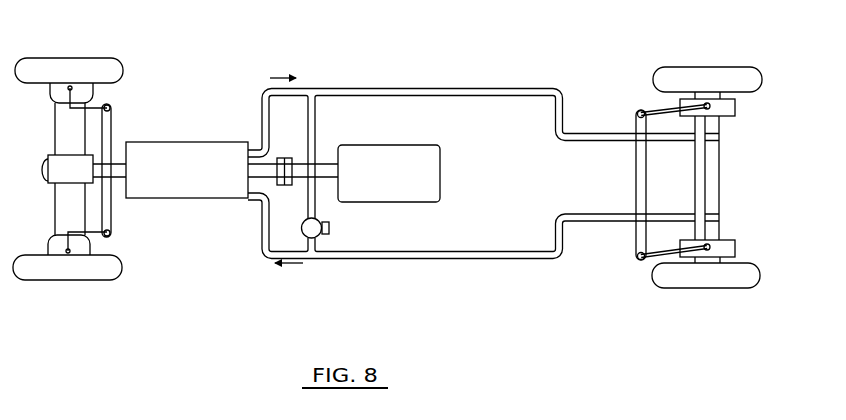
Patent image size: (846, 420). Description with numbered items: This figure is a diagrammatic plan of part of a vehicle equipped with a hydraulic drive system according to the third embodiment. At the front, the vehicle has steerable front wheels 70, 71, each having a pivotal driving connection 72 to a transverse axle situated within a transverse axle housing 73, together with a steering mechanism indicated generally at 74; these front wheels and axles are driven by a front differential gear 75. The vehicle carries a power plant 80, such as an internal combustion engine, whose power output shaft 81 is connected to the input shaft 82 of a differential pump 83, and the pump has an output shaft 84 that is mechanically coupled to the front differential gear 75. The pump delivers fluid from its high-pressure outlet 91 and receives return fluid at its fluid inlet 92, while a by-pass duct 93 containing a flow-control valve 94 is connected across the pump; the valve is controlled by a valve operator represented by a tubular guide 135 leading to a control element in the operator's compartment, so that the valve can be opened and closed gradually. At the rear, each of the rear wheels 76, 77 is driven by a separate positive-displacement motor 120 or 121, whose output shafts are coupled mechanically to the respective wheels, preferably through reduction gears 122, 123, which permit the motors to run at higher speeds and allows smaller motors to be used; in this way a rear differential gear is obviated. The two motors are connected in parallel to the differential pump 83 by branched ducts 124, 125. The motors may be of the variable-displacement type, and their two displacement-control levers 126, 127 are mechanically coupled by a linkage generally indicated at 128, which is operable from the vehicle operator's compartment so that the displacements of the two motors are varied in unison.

The steerable front wheel 70 is at (86, 64).
The steerable front wheel 71 is at (87, 272).
The pivotal driving connection 72 is at (66, 90).
The transverse axle housing 73 is at (63, 203).
The steering mechanism 74 is at (110, 124).
The front differential gear 75 is at (43, 165).
The rear wheel 76 is at (706, 70).
The rear wheel 77 is at (718, 285).
The power plant 80 is at (412, 150).
The power output shaft 81 is at (326, 166).
The input shaft 82 is at (274, 167).
The differential pump 83 is at (181, 198).
The output shaft 84 is at (120, 179).
The high-pressure outlet 91 is at (256, 112).
The fluid inlet 92 is at (257, 170).
The by-pass duct 93 is at (315, 112).
The flow-control valve 94 is at (301, 232).
The positive-displacement motor 120 is at (730, 112).
The positive-displacement motor 121 is at (731, 240).
The reduction gear 122 is at (722, 93).
The reduction gear 123 is at (721, 262).
The branched duct 124 is at (458, 92).
The branched duct 125 is at (458, 259).
The displacement-control lever 126 is at (657, 108).
The displacement-control lever 127 is at (641, 262).
The linkage 128 is at (639, 168).
The tubular guide 135 is at (331, 230).